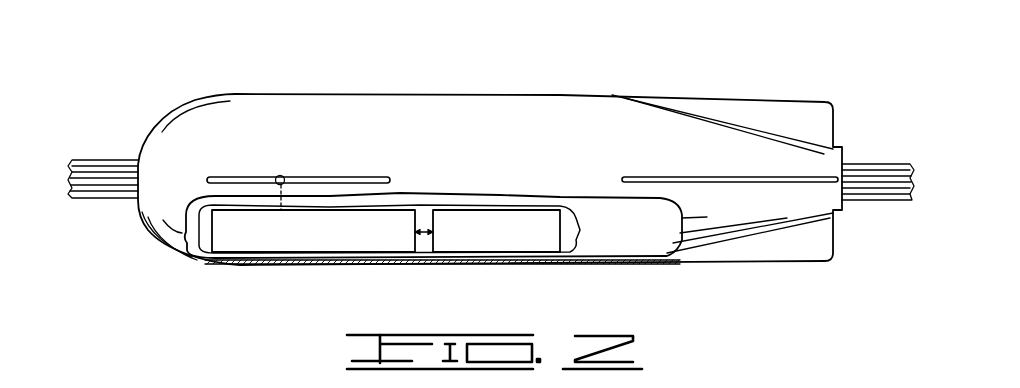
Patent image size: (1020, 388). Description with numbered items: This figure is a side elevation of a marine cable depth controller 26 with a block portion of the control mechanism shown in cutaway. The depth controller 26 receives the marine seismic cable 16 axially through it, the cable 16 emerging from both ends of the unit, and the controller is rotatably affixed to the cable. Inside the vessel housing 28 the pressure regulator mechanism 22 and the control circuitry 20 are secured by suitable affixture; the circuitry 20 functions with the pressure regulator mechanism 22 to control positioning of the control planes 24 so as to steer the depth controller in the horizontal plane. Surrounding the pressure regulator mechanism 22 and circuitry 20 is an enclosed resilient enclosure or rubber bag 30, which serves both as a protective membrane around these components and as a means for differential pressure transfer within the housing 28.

The marine seismic cable 16 is at (106, 178).
The control circuitry 20 is at (486, 253).
The pressure regulator mechanism 22 is at (337, 253).
The control planes 24 is at (303, 177).
The depth controller 26 is at (506, 76).
The vessel housing 28 is at (522, 148).
The rubber bag 30 is at (578, 250).